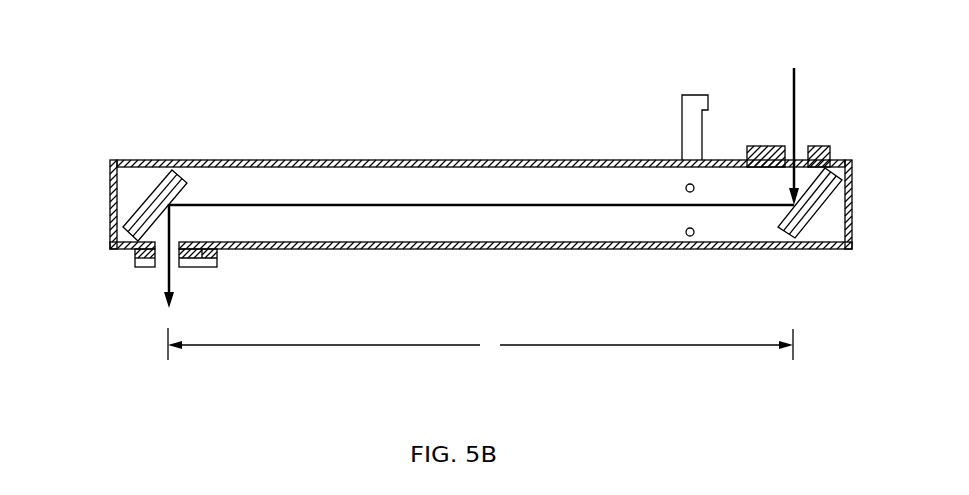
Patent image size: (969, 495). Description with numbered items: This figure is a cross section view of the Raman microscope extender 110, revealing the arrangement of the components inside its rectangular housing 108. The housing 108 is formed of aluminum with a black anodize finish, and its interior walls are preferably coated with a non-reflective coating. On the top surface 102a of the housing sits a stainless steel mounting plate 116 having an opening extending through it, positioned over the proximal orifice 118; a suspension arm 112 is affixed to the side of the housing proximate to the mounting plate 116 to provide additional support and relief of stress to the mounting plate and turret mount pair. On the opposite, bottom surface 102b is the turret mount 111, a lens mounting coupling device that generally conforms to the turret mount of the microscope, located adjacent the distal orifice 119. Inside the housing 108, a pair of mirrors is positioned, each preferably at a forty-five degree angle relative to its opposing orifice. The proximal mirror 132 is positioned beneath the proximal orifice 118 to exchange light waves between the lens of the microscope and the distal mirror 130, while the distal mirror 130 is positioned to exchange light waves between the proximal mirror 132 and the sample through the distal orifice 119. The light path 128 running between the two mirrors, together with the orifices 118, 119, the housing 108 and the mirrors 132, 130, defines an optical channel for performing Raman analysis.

The extender 110 is at (248, 68).
The housing 108 is at (492, 160).
The top surface 102a is at (360, 160).
The bottom surface 102b is at (412, 250).
The turret mount 111 is at (148, 265).
The suspension arm 112 is at (682, 105).
The proximal orifice 118 is at (802, 158).
The mounting plate 116 is at (830, 157).
The distal mirror 130 is at (125, 230).
The proximal mirror 132 is at (780, 230).
The optical path 128 is at (437, 205).
The distal orifice 119 is at (173, 263).